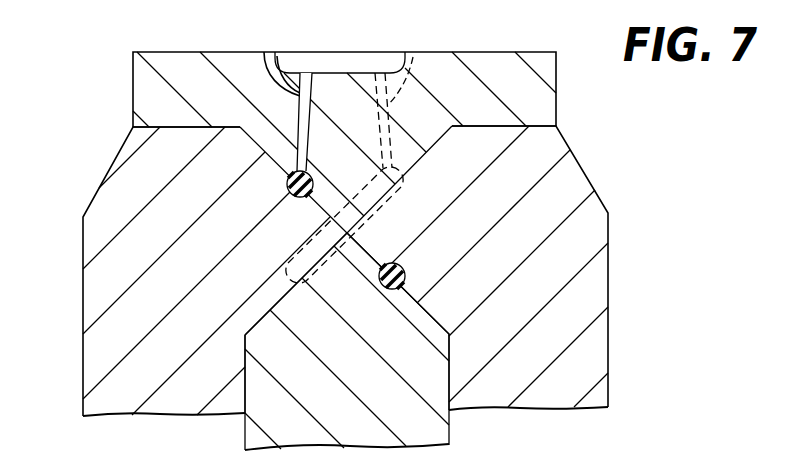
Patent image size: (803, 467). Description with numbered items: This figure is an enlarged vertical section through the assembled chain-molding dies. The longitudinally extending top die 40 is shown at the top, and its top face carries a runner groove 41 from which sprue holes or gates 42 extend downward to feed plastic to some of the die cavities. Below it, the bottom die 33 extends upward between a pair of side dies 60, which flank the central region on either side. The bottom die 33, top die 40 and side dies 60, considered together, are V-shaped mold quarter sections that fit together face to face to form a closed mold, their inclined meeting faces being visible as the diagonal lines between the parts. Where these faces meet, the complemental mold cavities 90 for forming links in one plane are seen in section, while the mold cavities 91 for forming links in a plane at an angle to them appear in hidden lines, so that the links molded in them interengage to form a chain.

The bottom die 33 is at (447, 446).
The top die 40 is at (488, 55).
The runner groove 41 is at (360, 60).
The sprue hole 42 is at (268, 52).
The side die 60 is at (89, 272).
The mold cavity 90 is at (289, 177).
The mold cavity 91 is at (404, 188).